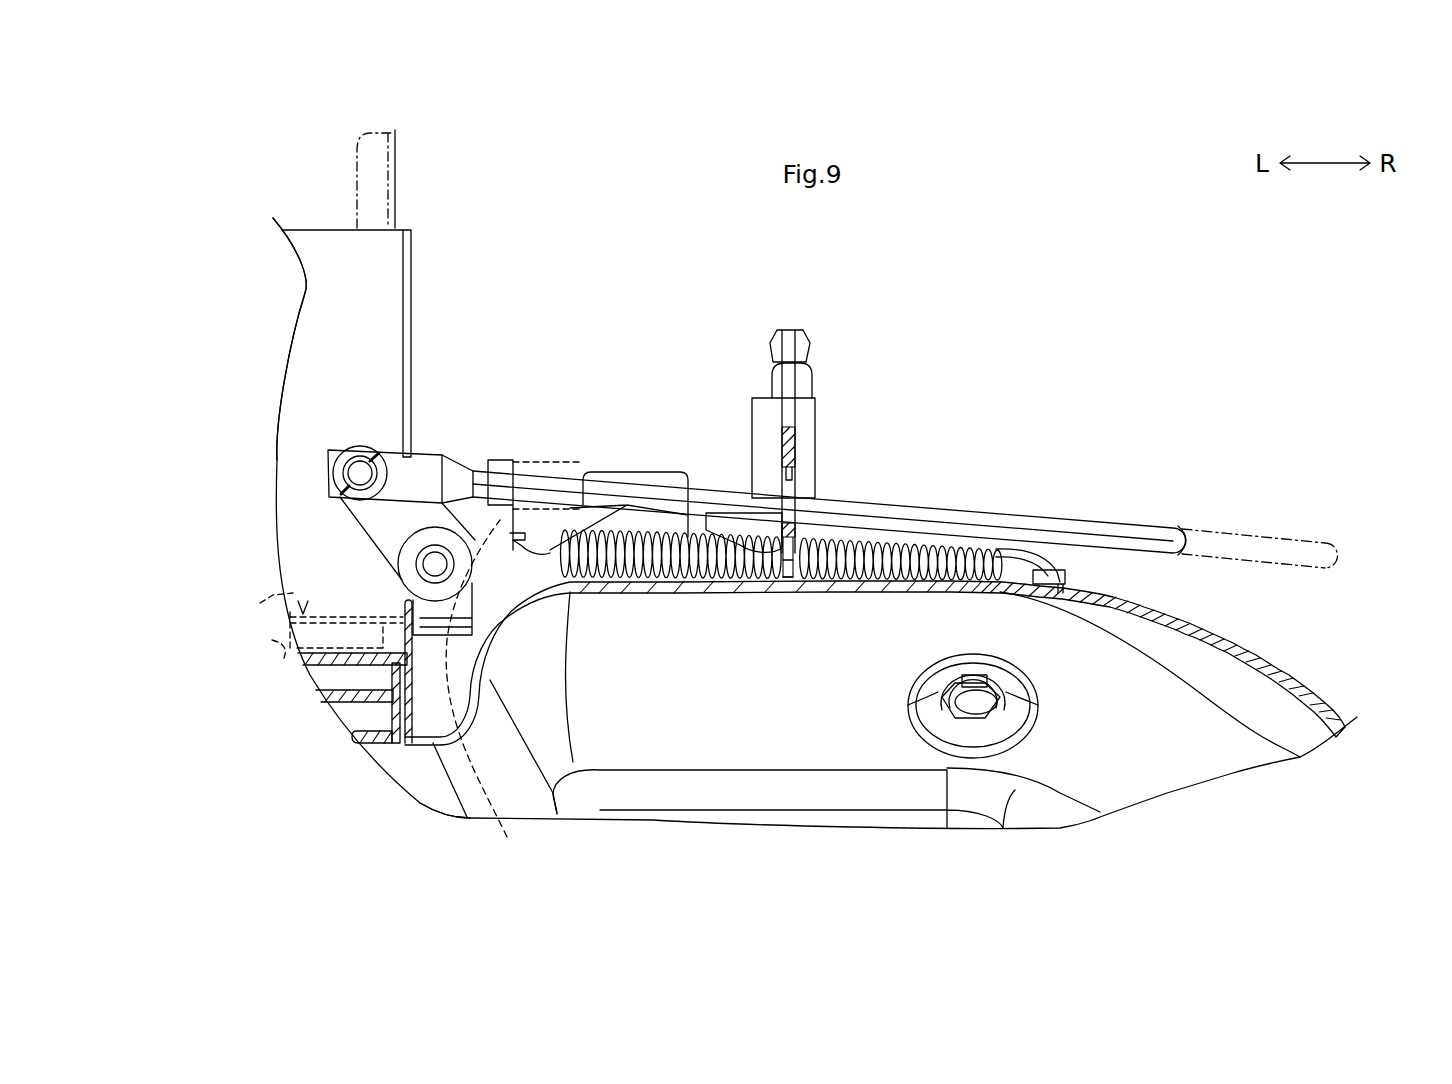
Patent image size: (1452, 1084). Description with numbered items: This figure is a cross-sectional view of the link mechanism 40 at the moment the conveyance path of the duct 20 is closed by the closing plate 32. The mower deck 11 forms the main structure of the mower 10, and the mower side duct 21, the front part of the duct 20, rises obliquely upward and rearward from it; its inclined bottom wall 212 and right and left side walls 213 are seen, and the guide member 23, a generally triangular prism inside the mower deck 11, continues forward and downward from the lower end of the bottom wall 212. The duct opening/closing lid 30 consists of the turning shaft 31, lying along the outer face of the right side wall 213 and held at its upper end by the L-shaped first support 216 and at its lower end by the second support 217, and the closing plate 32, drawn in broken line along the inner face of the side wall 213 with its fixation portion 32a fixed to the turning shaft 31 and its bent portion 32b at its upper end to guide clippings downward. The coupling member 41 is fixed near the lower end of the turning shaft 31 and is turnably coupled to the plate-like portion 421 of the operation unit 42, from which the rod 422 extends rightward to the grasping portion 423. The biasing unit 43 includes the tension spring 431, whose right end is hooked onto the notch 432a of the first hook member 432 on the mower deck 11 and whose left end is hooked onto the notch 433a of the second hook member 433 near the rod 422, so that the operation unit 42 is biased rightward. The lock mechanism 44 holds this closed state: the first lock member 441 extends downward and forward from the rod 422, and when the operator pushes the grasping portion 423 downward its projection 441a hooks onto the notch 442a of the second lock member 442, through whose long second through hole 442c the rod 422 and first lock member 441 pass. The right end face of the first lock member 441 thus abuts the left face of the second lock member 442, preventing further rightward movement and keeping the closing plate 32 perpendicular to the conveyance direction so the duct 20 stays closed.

The mower 10 is at (1302, 662).
The mower deck 11 is at (1230, 648).
The duct 20 is at (262, 303).
The mower side duct 21 is at (430, 336).
The bottom wall 212 is at (343, 337).
The side wall 213 is at (412, 265).
The first support 216 is at (474, 622).
The second support 217 is at (420, 747).
The guide member 23 is at (328, 708).
The duct opening/closing lid 30 is at (270, 642).
The turning shaft 31 is at (398, 578).
The closing plate 32 is at (318, 621).
The fixation portion 32a is at (510, 835).
The bent portion 32b is at (278, 660).
The link mechanism 40 is at (606, 380).
The coupling member 41 is at (400, 515).
The operation unit 42 is at (1134, 510).
The plate-like portion 421 is at (440, 458).
The rod 422 is at (962, 513).
The grasping portion 423 is at (1185, 530).
The biasing unit 43 is at (1112, 584).
The spring 431 is at (942, 560).
The first hook member 432 is at (1027, 567).
The notch 432a is at (1066, 575).
The second hook member 433 is at (610, 510).
The notch 433a is at (518, 530).
The lock mechanism 44 is at (854, 382).
The first lock member 441 is at (728, 513).
The projection 441a is at (772, 582).
The second lock member 442 is at (812, 452).
The notch 442a is at (808, 580).
The second through hole 442c is at (795, 480).